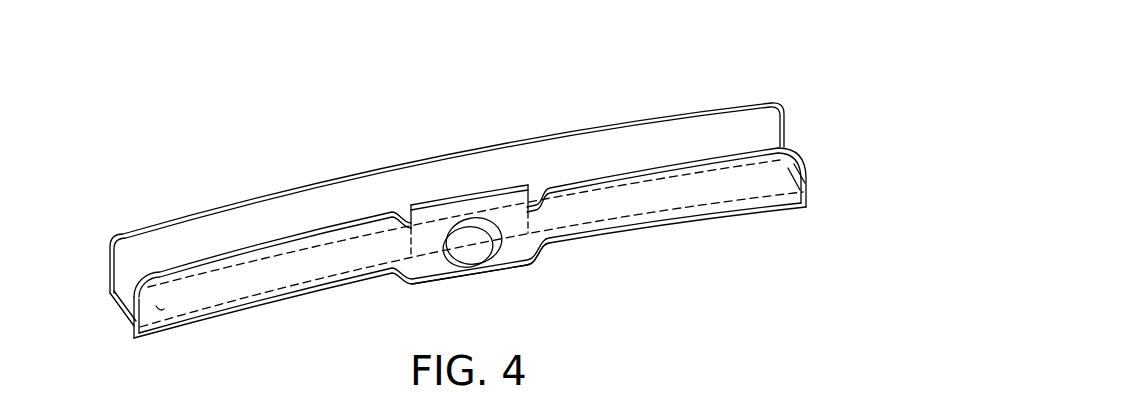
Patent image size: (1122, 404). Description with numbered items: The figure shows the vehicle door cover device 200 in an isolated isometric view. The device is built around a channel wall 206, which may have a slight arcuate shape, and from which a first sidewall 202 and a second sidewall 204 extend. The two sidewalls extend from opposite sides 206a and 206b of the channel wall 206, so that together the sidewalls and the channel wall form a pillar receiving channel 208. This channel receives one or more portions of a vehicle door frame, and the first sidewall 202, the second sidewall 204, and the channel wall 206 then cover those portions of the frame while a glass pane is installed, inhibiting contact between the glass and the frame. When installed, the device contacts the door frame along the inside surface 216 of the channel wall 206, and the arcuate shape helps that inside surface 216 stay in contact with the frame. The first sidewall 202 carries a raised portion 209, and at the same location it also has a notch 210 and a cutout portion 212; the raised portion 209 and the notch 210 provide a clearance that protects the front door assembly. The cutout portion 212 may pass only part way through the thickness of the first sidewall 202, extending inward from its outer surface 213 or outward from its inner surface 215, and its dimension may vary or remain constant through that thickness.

The vehicle door cover device 200 is at (686, 79).
The first sidewall 202 is at (789, 165).
The second sidewall 204 is at (128, 244).
The channel wall 206 is at (112, 297).
The side of the channel wall 206a is at (268, 299).
The side of the channel wall 206b is at (120, 292).
The pillar receiving channel 208 is at (403, 195).
The raised portion 209 is at (515, 258).
The notch 210 is at (428, 206).
The cutout portion 212 is at (472, 240).
The outer surface 213 is at (156, 310).
The inner surface 215 is at (252, 238).
The inside surface 216 is at (128, 319).